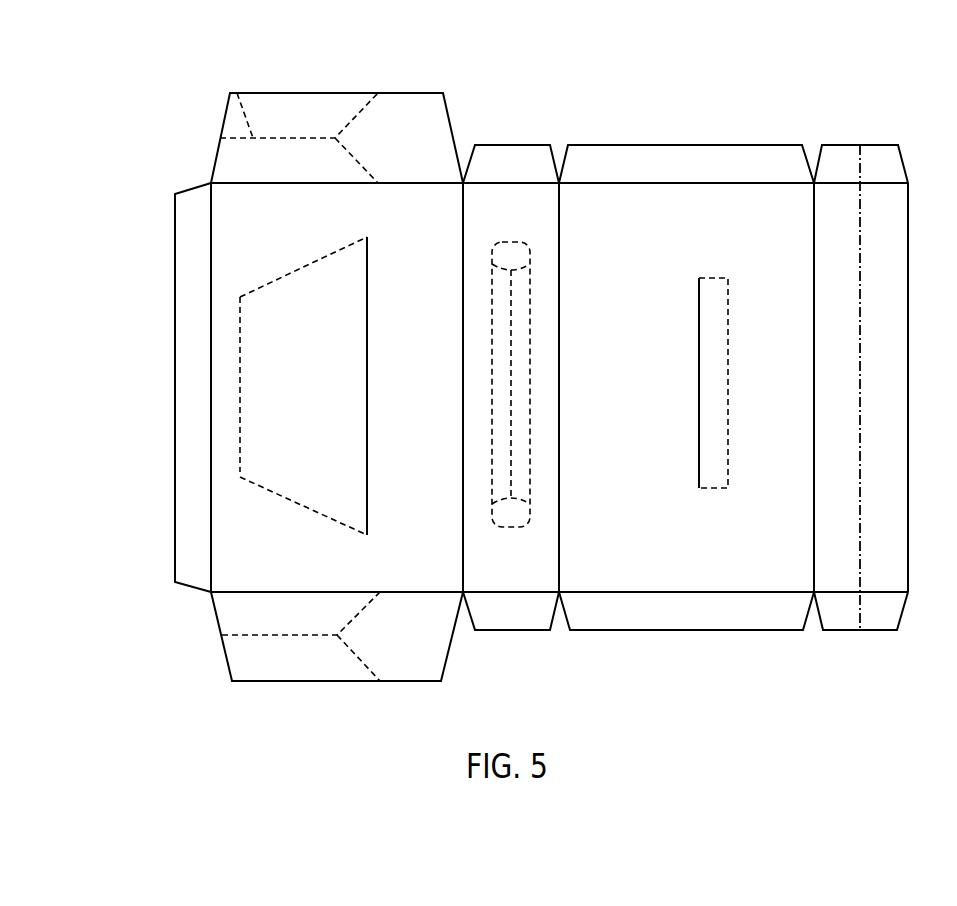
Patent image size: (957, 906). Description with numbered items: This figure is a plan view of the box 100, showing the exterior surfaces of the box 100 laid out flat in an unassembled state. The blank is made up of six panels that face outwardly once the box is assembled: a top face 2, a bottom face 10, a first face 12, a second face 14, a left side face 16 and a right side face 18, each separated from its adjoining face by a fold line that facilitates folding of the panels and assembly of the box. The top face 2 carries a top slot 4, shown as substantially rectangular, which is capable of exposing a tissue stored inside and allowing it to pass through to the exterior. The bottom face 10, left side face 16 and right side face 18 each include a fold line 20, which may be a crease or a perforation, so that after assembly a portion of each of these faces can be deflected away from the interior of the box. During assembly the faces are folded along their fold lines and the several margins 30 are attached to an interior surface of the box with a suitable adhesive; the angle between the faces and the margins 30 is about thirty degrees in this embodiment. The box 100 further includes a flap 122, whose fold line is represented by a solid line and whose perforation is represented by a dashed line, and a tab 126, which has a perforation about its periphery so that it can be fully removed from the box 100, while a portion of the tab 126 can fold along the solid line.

The box 100 is at (112, 106).
The top face 2 is at (545, 197).
The top slot 4 is at (512, 240).
The bottom face 10 is at (897, 200).
The first face 12 is at (228, 273).
The second face 14 is at (781, 570).
The left side face 16 is at (297, 672).
The right side face 18 is at (322, 105).
The fold line 20 is at (237, 92).
The margins 30 is at (757, 160).
The flap 122 is at (240, 473).
The tab 126 is at (720, 490).